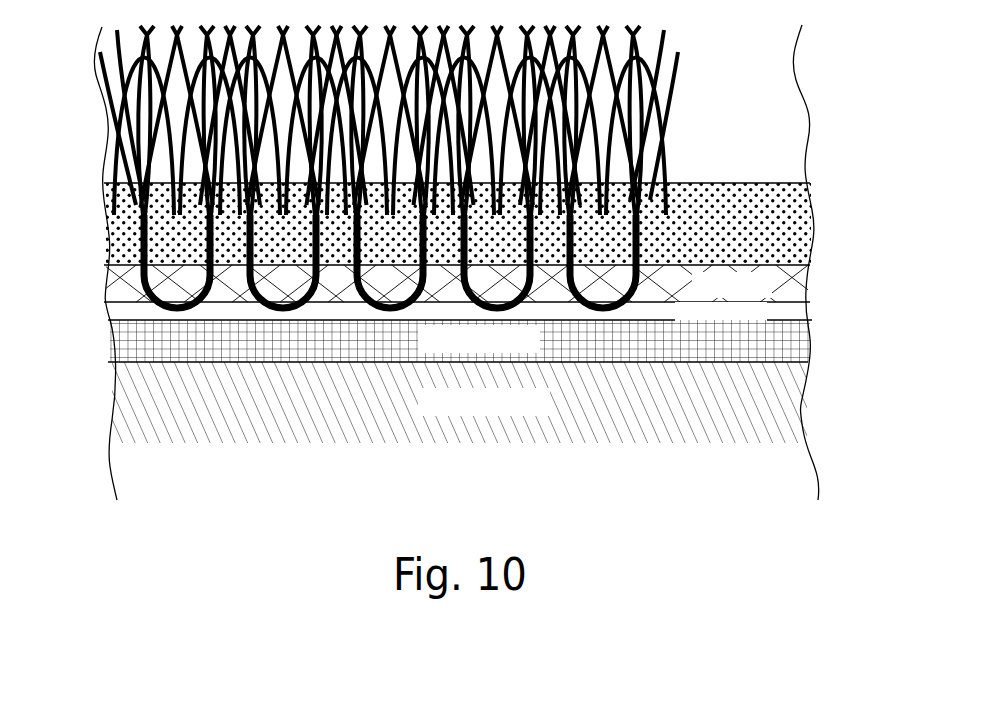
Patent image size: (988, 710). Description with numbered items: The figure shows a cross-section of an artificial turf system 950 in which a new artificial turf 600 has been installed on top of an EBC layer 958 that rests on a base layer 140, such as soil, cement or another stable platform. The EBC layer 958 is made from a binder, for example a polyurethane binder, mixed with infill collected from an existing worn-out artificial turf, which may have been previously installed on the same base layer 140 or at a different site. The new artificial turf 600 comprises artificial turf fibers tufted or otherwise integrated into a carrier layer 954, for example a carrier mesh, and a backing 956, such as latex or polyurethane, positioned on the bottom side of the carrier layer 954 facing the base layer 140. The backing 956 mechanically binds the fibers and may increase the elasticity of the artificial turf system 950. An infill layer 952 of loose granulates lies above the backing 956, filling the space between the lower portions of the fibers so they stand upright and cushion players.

The new artificial turf 600 is at (88, 33).
The artificial turf system 950 is at (763, 53).
The infill layer 952 is at (813, 213).
The carrier layer 954 is at (802, 282).
The backing 956 is at (803, 312).
The EBC layer 958 is at (803, 340).
The base layer 140 is at (802, 398).